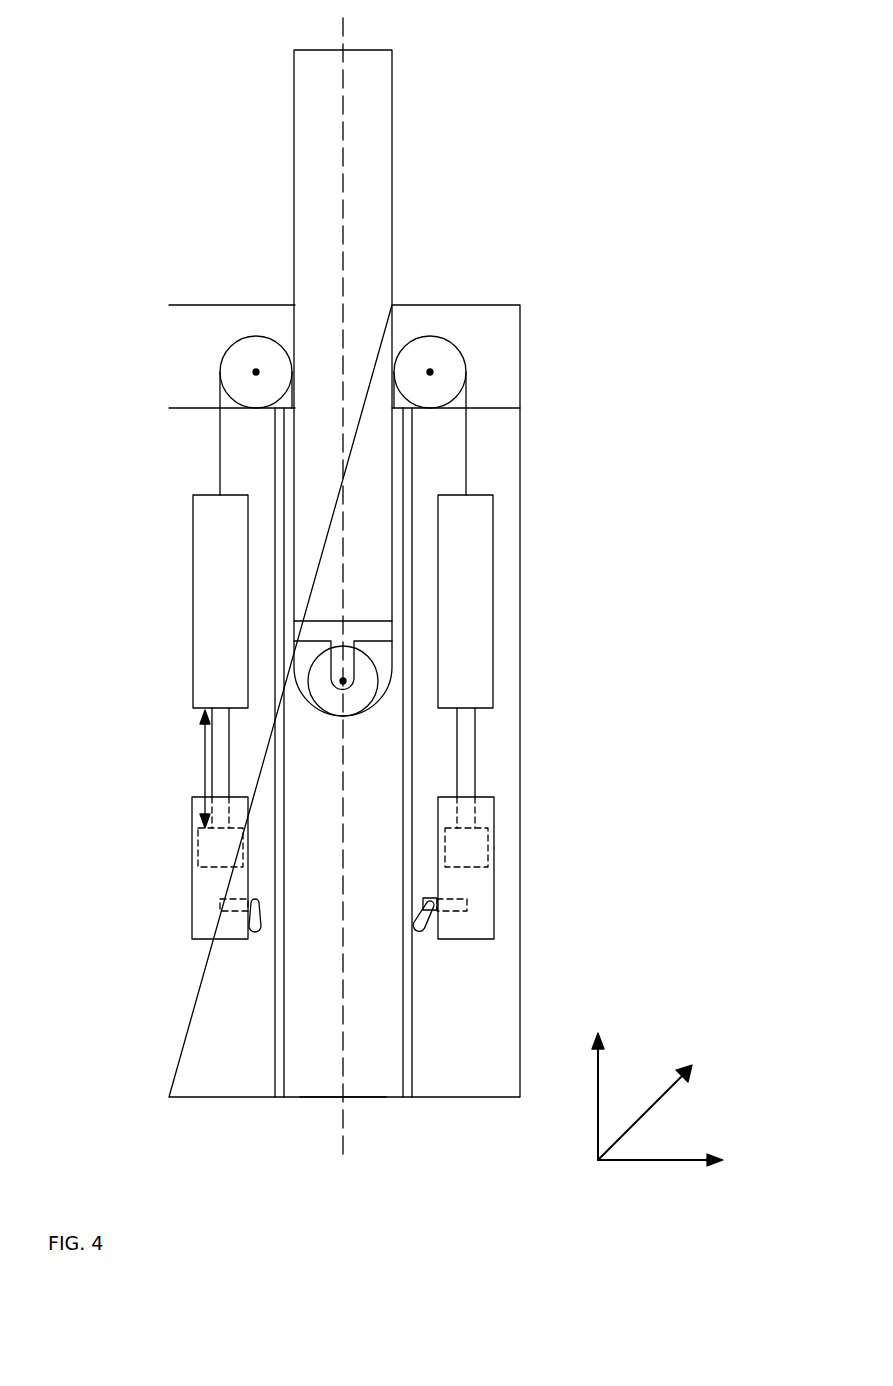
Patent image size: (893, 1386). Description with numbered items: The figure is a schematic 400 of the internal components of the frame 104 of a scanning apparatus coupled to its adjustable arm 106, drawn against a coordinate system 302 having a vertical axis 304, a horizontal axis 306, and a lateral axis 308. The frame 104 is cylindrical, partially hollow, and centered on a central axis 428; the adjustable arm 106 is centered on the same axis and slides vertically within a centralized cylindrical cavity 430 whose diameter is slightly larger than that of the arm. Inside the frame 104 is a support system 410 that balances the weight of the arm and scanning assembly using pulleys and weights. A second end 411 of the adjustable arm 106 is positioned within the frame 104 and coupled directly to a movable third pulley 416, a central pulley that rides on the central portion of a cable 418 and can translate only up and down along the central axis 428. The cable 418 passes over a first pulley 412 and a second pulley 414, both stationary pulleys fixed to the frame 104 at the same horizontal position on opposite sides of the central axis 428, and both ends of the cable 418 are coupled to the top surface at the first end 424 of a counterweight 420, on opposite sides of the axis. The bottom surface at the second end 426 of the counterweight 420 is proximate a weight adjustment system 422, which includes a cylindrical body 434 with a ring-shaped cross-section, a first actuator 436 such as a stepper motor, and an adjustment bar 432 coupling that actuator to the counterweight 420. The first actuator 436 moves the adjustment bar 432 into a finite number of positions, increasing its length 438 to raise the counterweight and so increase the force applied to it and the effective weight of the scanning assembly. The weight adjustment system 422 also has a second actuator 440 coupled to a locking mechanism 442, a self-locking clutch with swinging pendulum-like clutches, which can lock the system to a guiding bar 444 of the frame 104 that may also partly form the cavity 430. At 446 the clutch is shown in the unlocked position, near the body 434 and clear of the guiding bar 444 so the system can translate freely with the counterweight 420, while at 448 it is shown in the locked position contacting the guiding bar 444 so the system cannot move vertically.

The schematic 400 is at (662, 82).
The frame 104 is at (167, 432).
The adjustable arm 106 is at (392, 146).
The central axis 428 is at (343, 1127).
The second end 411 is at (332, 629).
The third pulley 416 is at (332, 700).
The first pulley 412 is at (256, 352).
The second pulley 414 is at (438, 352).
The cable 418 is at (467, 480).
The guiding bar 444 is at (277, 1002).
The cavity 430 is at (312, 1063).
The support system 410 is at (570, 434).
The first end 424 is at (200, 495).
The counterweight 420 is at (468, 622).
The second end 426 is at (203, 713).
The length 438 is at (205, 764).
The second actuator 440 is at (240, 908).
The locking mechanism 442 is at (261, 928).
The unlocked position 446 is at (258, 953).
The weight adjustment system 422 is at (598, 813).
The adjustment bar 432 is at (476, 765).
The first actuator 436 is at (488, 843).
The body 434 is at (485, 907).
The locked position 448 is at (422, 945).
The coordinate system 302 is at (607, 1208).
The vertical axis 304 is at (598, 1113).
The horizontal axis 306 is at (675, 1163).
The lateral axis 308 is at (650, 1108).